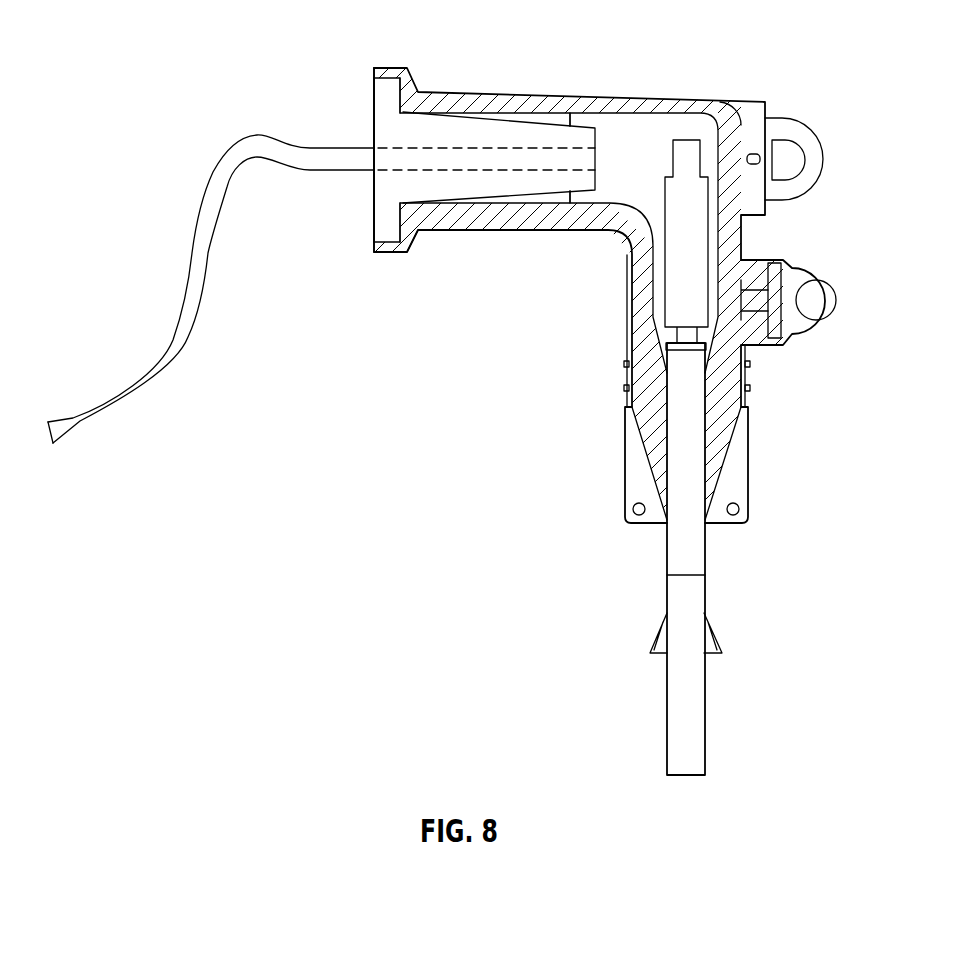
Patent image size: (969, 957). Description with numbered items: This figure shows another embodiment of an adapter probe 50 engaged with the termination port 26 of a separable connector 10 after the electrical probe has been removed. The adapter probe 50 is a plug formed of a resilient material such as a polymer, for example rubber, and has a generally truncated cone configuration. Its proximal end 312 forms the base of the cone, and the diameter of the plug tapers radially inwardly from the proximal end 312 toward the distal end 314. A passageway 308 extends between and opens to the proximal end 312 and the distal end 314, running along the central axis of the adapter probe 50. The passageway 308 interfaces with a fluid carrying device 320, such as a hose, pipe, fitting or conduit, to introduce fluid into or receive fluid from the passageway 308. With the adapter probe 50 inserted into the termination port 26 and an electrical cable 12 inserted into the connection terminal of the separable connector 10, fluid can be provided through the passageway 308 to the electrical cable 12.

The separable connector 10 is at (722, 58).
The electrical cable 12 is at (710, 723).
The termination port 26 is at (370, 242).
The adapter probe 50 is at (366, 126).
The passageway 308 is at (470, 145).
The proximal end 312 is at (370, 198).
The distal end 314 is at (597, 138).
The fluid carrying device 320 is at (177, 323).